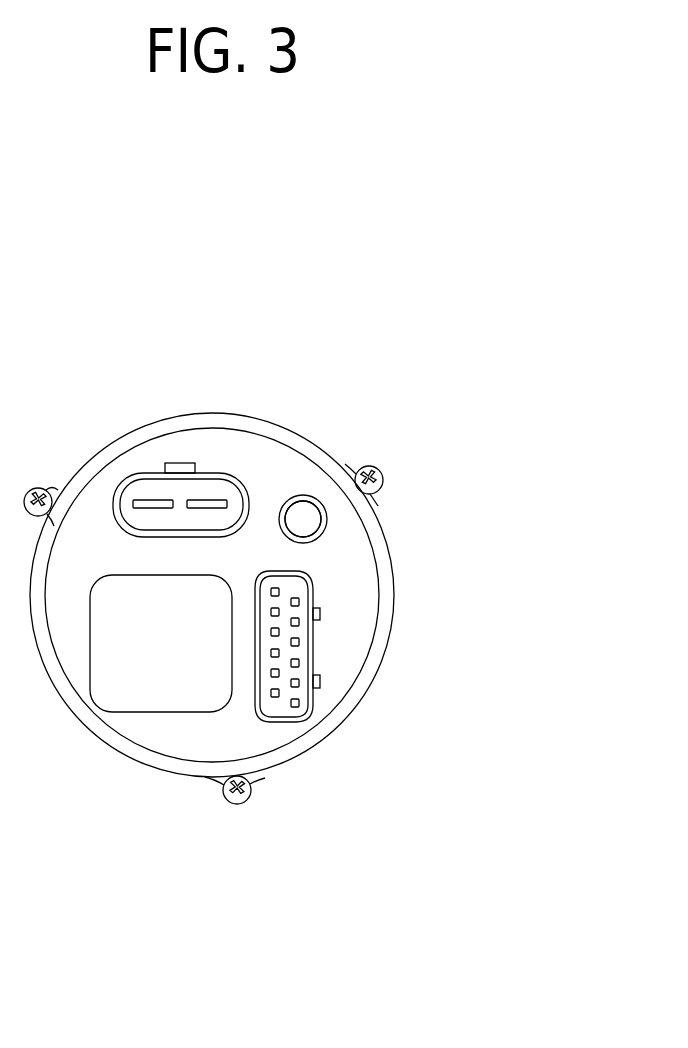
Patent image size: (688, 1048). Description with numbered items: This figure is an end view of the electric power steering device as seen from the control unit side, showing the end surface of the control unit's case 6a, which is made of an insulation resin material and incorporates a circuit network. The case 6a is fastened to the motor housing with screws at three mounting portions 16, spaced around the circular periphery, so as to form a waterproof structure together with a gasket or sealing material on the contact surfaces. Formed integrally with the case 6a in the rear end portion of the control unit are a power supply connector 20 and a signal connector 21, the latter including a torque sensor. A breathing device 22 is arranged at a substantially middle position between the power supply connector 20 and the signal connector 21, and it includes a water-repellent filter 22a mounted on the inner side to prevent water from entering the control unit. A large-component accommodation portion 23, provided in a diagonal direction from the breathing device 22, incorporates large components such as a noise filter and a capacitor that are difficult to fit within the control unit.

The case 6a is at (162, 413).
The mounting portions 16 is at (385, 493).
The power supply connector 20 is at (186, 461).
The signal connector 21 is at (322, 710).
The breathing device 22 is at (325, 497).
The water-repellent filter 22a is at (320, 533).
The large-component accommodation portion 23 is at (103, 710).